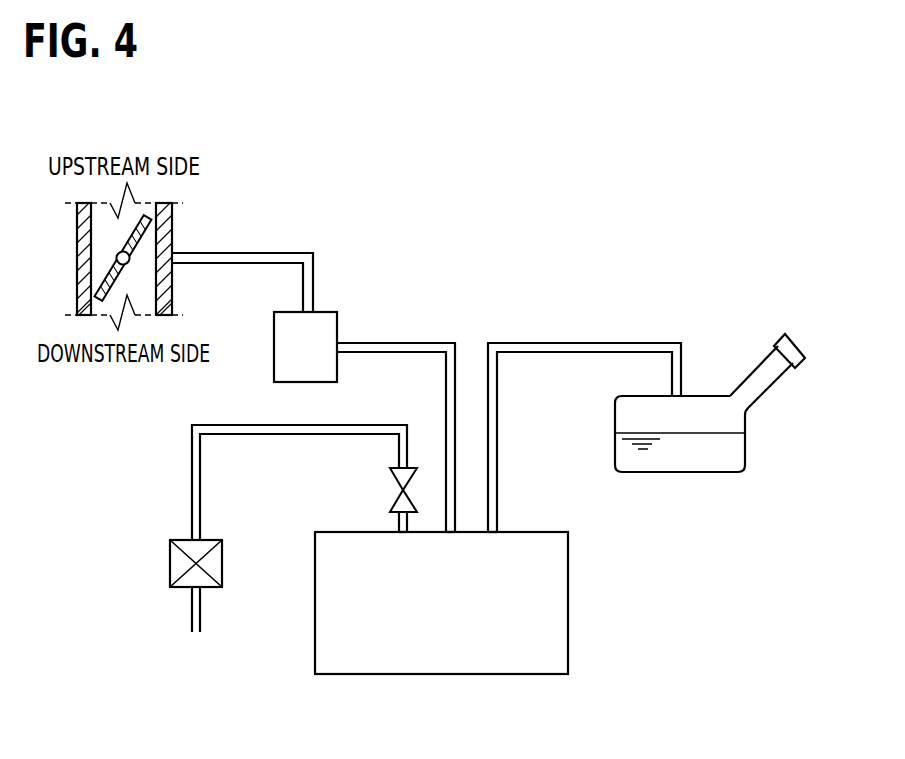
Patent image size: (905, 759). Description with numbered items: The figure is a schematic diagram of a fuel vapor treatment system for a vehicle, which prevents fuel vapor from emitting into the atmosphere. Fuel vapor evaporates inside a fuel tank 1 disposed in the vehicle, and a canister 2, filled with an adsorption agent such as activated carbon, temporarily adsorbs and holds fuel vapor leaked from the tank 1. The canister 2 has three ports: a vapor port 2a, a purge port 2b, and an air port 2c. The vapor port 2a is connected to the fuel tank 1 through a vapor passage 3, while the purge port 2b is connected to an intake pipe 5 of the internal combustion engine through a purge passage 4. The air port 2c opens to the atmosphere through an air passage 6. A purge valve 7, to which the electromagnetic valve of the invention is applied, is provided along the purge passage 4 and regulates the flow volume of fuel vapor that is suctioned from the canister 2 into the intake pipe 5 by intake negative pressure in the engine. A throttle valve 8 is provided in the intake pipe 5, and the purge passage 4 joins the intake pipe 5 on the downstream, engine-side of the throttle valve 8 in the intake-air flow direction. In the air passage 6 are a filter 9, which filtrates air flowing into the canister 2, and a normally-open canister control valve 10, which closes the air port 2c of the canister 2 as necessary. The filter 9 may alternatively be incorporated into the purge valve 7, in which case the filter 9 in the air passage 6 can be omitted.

The fuel tank 1 is at (677, 473).
The canister 2 is at (442, 677).
The vapor port 2a is at (492, 535).
The purge port 2b is at (450, 535).
The air port 2c is at (403, 535).
The vapor passage 3 is at (622, 343).
The purge passage 4 is at (243, 253).
The intake pipe 5 is at (77, 251).
The air passage 6 is at (190, 465).
The purge valve 7 is at (326, 309).
The throttle valve 8 is at (103, 283).
The filter 9 is at (170, 554).
The canister control valve 10 is at (395, 500).